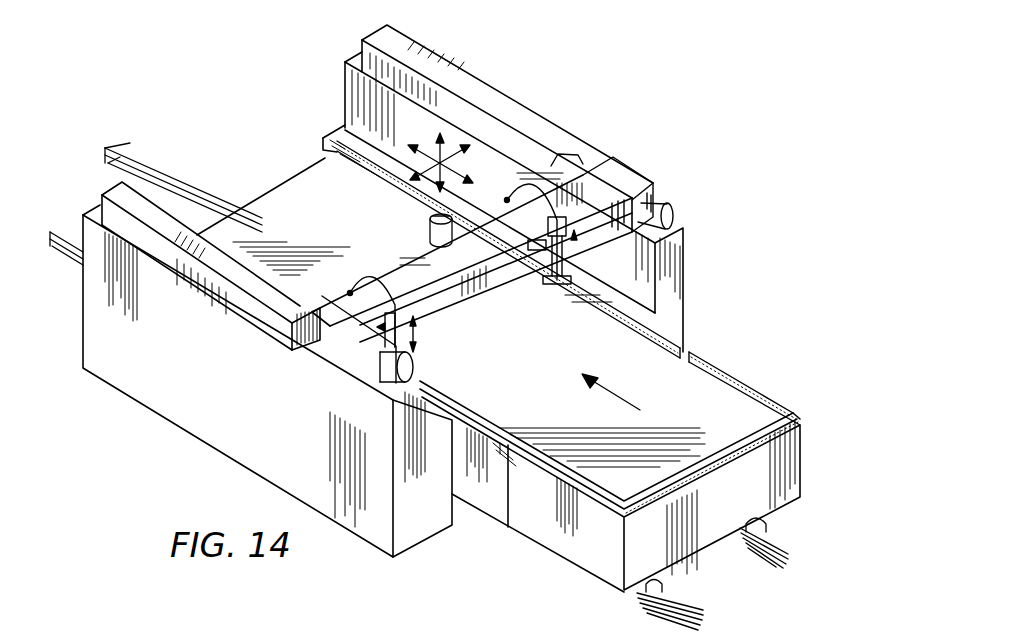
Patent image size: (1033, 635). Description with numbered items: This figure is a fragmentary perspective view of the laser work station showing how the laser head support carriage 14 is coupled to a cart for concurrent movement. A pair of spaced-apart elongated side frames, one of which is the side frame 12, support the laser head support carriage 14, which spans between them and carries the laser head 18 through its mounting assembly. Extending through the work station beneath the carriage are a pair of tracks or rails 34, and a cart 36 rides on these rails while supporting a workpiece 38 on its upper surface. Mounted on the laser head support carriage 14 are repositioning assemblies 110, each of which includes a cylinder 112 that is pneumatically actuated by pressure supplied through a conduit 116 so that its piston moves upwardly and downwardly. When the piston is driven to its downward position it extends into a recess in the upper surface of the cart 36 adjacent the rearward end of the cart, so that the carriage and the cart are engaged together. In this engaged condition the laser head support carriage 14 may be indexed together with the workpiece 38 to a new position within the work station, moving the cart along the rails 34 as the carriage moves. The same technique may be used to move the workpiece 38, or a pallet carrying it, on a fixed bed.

The side frame 12 is at (198, 380).
The laser head support carriage 14 is at (490, 214).
The laser head 18 is at (429, 230).
The tracks or rails 34 is at (690, 598).
The cart 36 is at (806, 456).
The workpiece 38 is at (678, 426).
The repositioning assembly 110 is at (356, 346).
The cylinder 112 is at (536, 272).
The conduit 116 is at (583, 161).